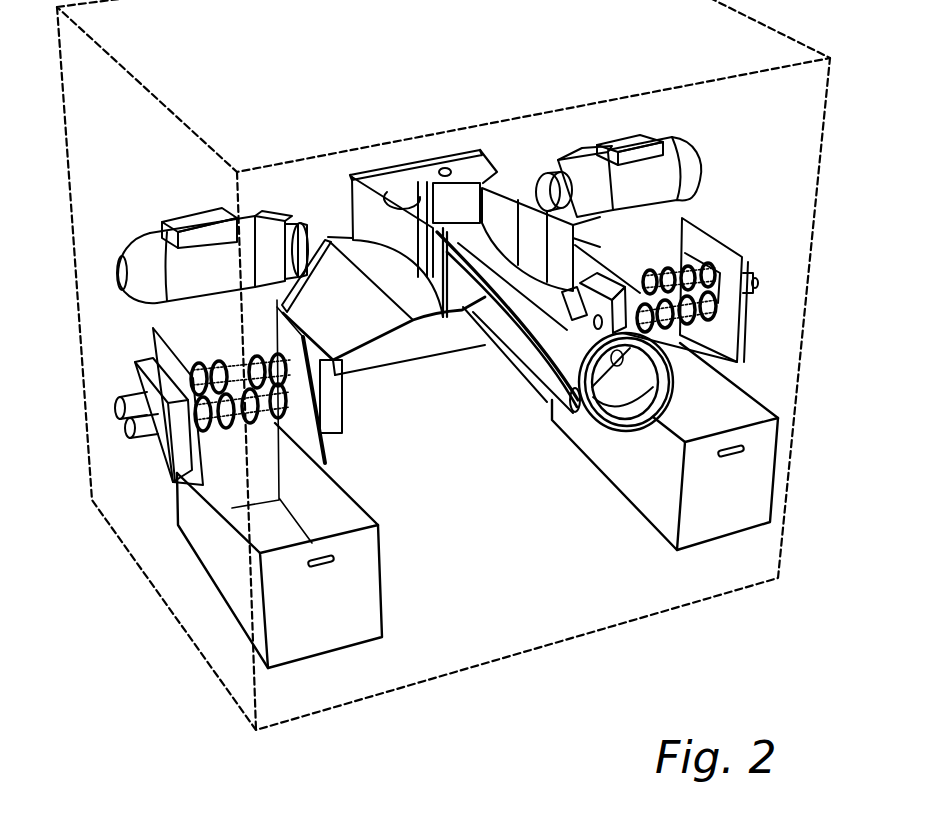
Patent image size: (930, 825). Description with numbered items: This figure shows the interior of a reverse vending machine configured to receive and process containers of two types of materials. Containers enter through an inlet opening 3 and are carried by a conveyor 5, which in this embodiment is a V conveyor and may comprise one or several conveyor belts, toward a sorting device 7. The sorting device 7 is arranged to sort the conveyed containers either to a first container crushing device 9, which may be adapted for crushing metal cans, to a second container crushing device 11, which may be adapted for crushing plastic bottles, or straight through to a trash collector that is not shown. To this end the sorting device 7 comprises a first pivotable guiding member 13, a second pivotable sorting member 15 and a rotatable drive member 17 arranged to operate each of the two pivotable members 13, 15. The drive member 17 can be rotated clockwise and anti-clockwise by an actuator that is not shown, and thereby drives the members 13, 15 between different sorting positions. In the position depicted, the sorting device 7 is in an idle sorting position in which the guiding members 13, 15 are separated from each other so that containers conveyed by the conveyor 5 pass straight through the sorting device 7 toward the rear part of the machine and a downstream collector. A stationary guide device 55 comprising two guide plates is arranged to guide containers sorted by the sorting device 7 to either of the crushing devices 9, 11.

The inlet opening 3 is at (637, 388).
The conveyor 5 is at (507, 385).
The sorting device 7 is at (530, 158).
The first container crushing device 9 is at (660, 250).
The second container crushing device 11 is at (210, 350).
The first pivotable guiding member 13 is at (503, 180).
The second pivotable sorting member 15 is at (393, 240).
The rotatable drive member 17 is at (420, 175).
The stationary guide device 55 is at (332, 273).